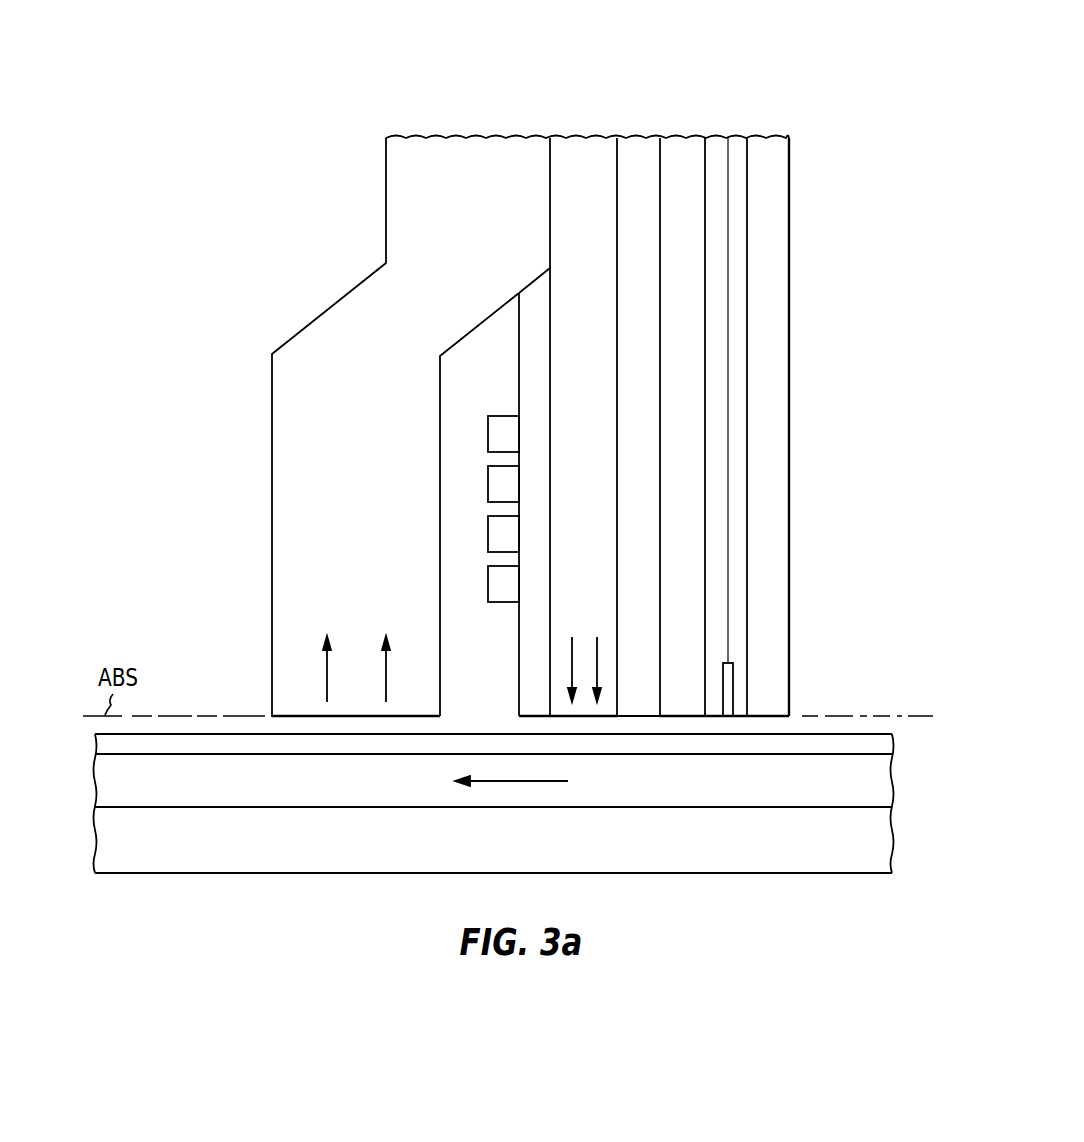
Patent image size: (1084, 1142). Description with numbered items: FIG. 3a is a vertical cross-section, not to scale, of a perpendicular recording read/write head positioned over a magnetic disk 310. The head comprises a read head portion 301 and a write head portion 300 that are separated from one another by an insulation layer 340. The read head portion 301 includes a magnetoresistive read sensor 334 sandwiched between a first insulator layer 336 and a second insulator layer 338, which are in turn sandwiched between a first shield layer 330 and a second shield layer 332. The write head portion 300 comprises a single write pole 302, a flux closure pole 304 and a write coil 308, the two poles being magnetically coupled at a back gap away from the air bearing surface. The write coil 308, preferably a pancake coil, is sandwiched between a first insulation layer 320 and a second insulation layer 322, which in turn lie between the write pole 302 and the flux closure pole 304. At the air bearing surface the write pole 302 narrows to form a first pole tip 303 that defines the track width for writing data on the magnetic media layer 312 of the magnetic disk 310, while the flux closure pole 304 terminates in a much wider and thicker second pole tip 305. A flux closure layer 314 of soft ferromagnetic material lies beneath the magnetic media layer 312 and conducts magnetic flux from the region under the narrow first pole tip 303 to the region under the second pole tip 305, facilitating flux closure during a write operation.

The write head portion 300 is at (618, 63).
The read head portion 301 is at (790, 63).
The write pole P1 302 is at (563, 529).
The first pole tip 303 is at (560, 714).
The flux closure pole P2 304 is at (341, 524).
The second pole tip 305 is at (289, 718).
The write coil 308 is at (490, 415).
The magnetic disk 310 is at (245, 874).
The magnetic media layer 312 is at (893, 742).
The flux closure layer 314 is at (893, 788).
The first insulation layer 320 is at (534, 281).
The second insulation layer 322 is at (478, 326).
The first shield layer S1 330 is at (790, 192).
The second shield layer S2 332 is at (680, 138).
The magnetoresistive read sensor 334 is at (729, 718).
The first insulator layer 336 is at (740, 138).
The second insulator layer 338 is at (716, 138).
The insulation layer 340 is at (641, 138).